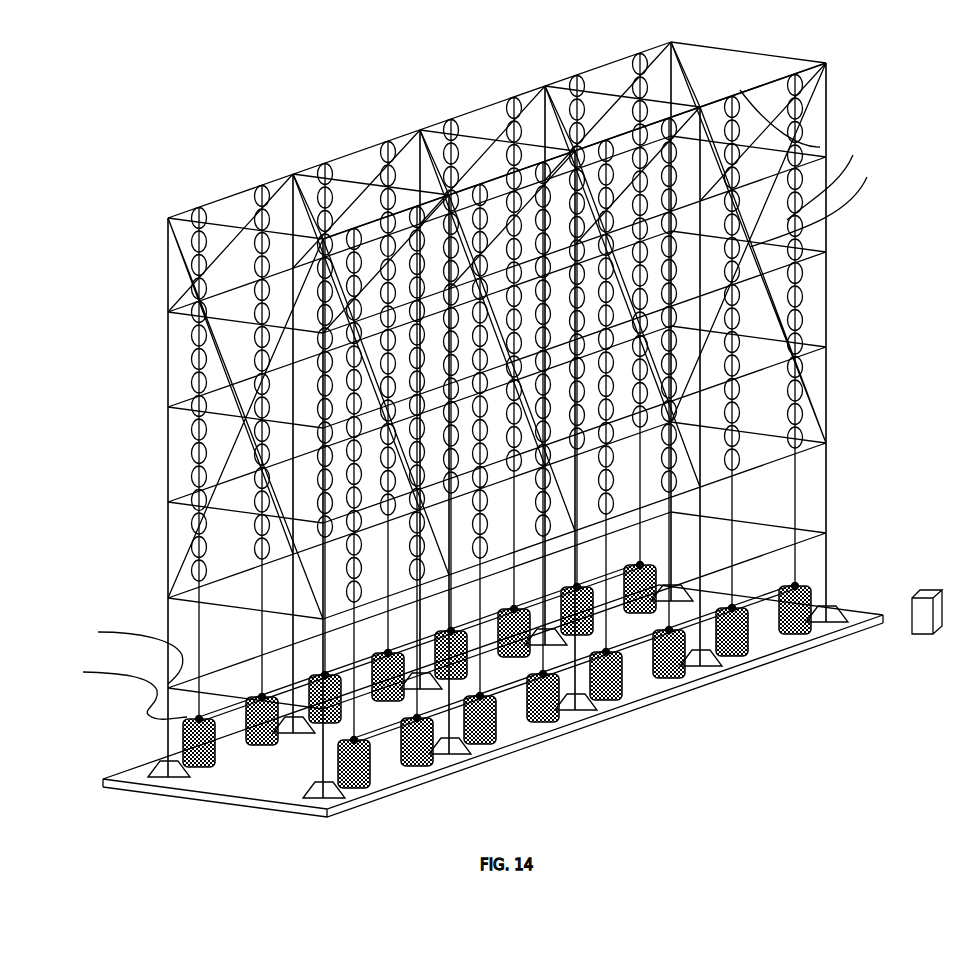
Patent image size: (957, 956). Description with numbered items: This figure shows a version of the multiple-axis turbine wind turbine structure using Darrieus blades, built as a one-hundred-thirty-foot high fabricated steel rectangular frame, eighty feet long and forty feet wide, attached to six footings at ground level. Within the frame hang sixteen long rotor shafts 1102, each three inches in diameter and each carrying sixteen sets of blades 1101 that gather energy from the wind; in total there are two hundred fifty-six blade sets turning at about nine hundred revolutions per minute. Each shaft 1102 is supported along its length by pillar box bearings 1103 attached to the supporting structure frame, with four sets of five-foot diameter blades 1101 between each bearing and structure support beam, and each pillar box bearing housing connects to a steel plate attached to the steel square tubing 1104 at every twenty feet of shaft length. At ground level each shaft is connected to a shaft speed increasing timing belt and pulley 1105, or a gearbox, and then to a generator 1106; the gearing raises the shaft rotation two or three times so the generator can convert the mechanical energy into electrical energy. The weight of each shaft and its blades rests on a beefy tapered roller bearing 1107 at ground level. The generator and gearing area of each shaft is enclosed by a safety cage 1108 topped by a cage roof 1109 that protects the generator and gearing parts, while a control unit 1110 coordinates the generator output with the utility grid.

The sets of blades 1101 is at (808, 345).
The rotor shaft 1102 is at (805, 403).
The pillar box bearing 1103 is at (805, 62).
The steel square tubing 1104 is at (812, 150).
The timing belt and pulley 1105 is at (767, 690).
The generator 1106 is at (357, 790).
The tapered roller bearing 1107 is at (795, 450).
The cage 1108 is at (612, 700).
The cage roof 1109 is at (112, 691).
The control unit 1110 is at (912, 632).